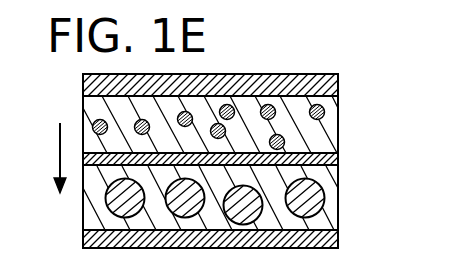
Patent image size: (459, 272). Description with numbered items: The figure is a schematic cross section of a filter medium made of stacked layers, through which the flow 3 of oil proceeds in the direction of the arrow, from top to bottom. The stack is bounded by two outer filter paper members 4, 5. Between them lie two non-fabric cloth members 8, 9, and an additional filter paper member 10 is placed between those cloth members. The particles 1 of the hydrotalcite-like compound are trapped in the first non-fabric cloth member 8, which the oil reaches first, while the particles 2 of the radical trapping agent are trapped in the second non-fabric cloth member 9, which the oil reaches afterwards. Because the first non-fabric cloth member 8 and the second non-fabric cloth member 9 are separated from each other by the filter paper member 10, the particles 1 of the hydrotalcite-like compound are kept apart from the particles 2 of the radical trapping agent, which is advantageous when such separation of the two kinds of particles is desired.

The filter paper member 4 is at (338, 82).
The particles of the hydrotalcite-like compound 1 is at (338, 111).
The first non-fabric cloth member 8 is at (337, 135).
The additional filter paper member 10 is at (335, 162).
The particles of the radical trapping agent 2 is at (338, 187).
The second non-fabric cloth member 9 is at (338, 207).
The filter paper member 5 is at (338, 232).
The flow of oil 3 is at (58, 150).